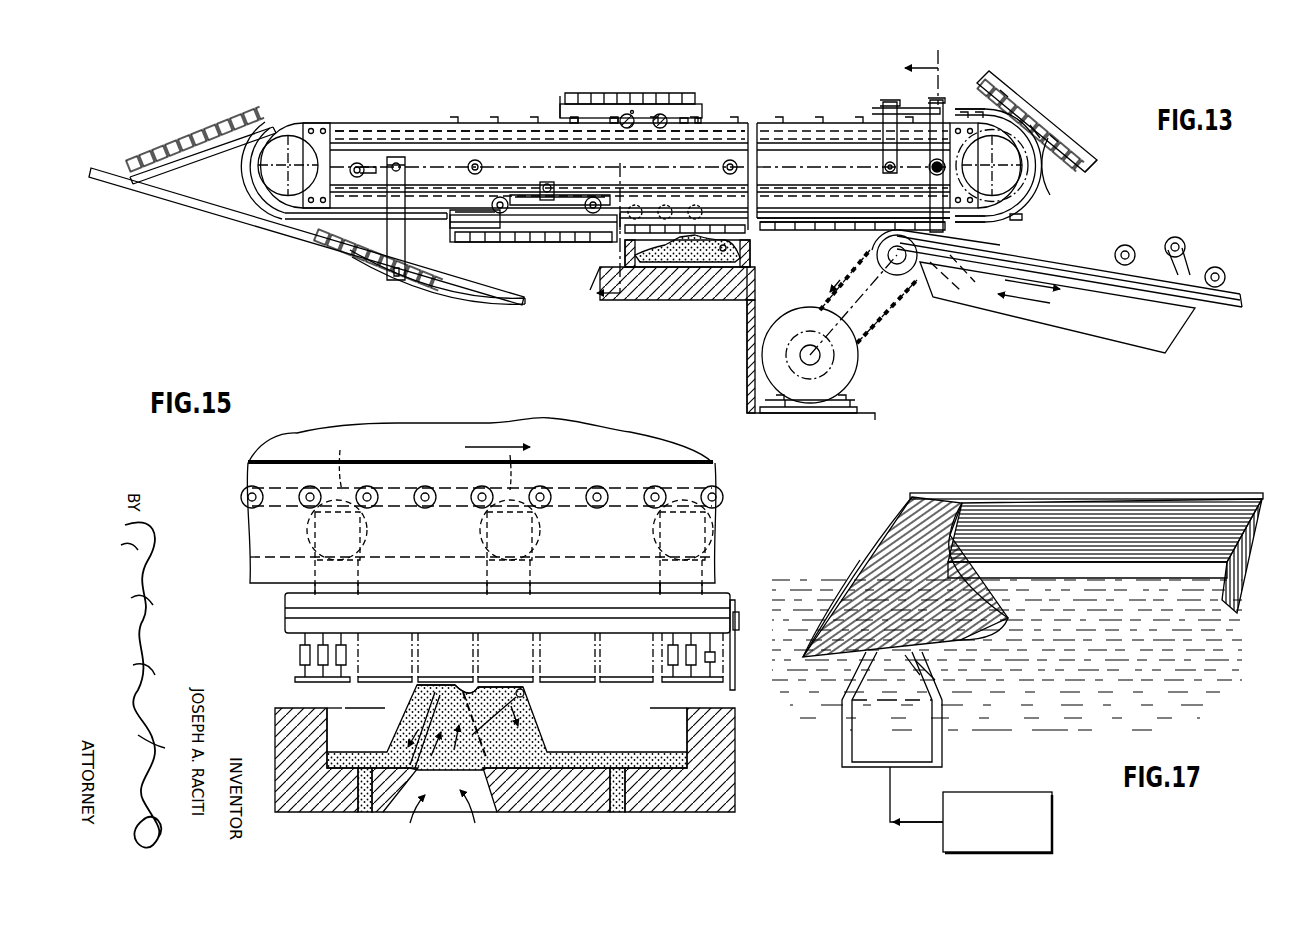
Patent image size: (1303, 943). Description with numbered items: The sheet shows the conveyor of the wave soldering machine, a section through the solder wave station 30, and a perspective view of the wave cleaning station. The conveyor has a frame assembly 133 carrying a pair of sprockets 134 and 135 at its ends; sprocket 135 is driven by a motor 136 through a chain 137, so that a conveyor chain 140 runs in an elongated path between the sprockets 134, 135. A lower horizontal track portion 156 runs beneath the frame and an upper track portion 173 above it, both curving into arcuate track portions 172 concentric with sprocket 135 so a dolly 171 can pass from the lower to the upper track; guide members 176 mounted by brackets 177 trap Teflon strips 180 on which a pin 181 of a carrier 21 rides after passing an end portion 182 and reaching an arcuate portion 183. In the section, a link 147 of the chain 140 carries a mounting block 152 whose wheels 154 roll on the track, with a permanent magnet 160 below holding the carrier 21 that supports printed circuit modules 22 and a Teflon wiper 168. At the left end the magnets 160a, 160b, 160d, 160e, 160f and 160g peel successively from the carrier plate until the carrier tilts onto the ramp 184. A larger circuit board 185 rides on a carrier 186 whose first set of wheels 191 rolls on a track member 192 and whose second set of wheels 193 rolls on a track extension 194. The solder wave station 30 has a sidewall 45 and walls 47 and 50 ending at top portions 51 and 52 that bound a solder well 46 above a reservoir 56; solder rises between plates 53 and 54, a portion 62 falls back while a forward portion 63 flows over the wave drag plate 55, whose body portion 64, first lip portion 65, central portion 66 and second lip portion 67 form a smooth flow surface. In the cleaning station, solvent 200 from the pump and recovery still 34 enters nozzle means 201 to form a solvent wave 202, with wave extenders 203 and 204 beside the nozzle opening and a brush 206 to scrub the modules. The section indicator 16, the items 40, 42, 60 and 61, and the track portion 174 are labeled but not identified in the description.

In FIG. 13, the section line 16- 16 is at (784, 177).
In FIG. 15, the carrier 21 is at (285, 625).
In FIG. 15, the printed circuit modules 22 is at (715, 655).
In FIG. 13, the solder wave station 30 is at (685, 262).
In FIG. 17, the pump and recovery still 34 is at (1052, 806).
In FIG. 13, the discharge conveyor 40 is at (1085, 330).
In FIG. 13, the chain guide unit 42 is at (1065, 128).
In FIG. 15, the sidewall 45 is at (372, 708).
In FIG. 15, the solder well 46 is at (362, 741).
In FIG. 15, the wall 47 is at (340, 708).
In FIG. 15, the wall 50 is at (680, 708).
In FIG. 15, the top portion 51 is at (285, 708).
In FIG. 15, the top portion 52 is at (725, 708).
In FIG. 15, the plate 53 is at (420, 760).
In FIG. 15, the plate 54 is at (475, 765).
In FIG. 15, the wave drag plate 55 is at (510, 720).
In FIG. 15, the reservoir 56 is at (365, 812).
In FIG. 15, the solder inlet slot 60 is at (440, 811).
In FIG. 15, the nozzle lip 61 is at (440, 685).
In FIG. 15, the portion 62 is at (412, 697).
In FIG. 15, the forward portion 63 is at (553, 728).
In FIG. 15, the body portion 64 is at (500, 710).
In FIG. 15, the first lip portion 65 is at (470, 690).
In FIG. 15, the recessed horizontal central portion 66 is at (490, 690).
In FIG. 15, the second lip portion 67 is at (520, 688).
In FIG. 13, the frame assembly 133 is at (705, 150).
In FIG. 13, the sprocket 134 is at (272, 166).
In FIG. 13, the sprocket 135 is at (1030, 180).
In FIG. 13, the motor 136 is at (850, 368).
In FIG. 13, the chain 137 is at (880, 320).
In FIG. 13, the conveyor chain 140 is at (500, 130).
In FIG. 15, the conveyor chain 140 is at (725, 497).
In FIG. 15, the link 147 is at (726, 470).
In FIG. 15, the mounting block 152 is at (366, 555).
In FIG. 15, the wheel 154 is at (368, 522).
In FIG. 13, the horizontal track portion 156 is at (840, 225).
In FIG. 15, the permanent magnet 160 is at (360, 578).
In FIG. 13, the magnet 160a is at (982, 115).
In FIG. 13, the magnet 160b is at (1008, 103).
In FIG. 13, the magnet 160d is at (1085, 172).
In FIG. 13, the magnet 160e is at (1040, 215).
In FIG. 13, the first magnet 160f is at (268, 210).
In FIG. 13, the magnet 160g is at (262, 112).
In FIG. 13, the Teflon wiper 168 is at (562, 100).
In FIG. 15, the Teflon wiper 168 is at (740, 628).
In FIG. 15, the dolly 171 is at (675, 590).
In FIG. 13, the arcuate track portion 172 is at (1020, 218).
In FIG. 13, the upper track portion 173 is at (826, 123).
In FIG. 13, the guide rail 174 is at (1058, 140).
In FIG. 13, the guide member 176 is at (905, 108).
In FIG. 13, the bracket 177 is at (936, 105).
In FIG. 13, the Teflon strip 180 is at (1002, 95).
In FIG. 13, the pin 181 is at (1040, 138).
In FIG. 13, the end portion 182 is at (870, 230).
In FIG. 13, the arcuate portion 183 is at (1035, 197).
In FIG. 13, the ramp 184 is at (192, 208).
In FIG. 13, the circuit board 185 is at (540, 242).
In FIG. 13, the carrier 186 is at (514, 242).
In FIG. 13, the first set of wheels 191 is at (503, 198).
In FIG. 13, the track member 192 is at (470, 228).
In FIG. 13, the second set of wheels 193 is at (550, 182).
In FIG. 13, the track extension 194 is at (580, 197).
In FIG. 17, the solvent 200 is at (1148, 515).
In FIG. 17, the nozzle means 201 is at (845, 700).
In FIG. 17, the solvent wave 202 is at (952, 520).
In FIG. 17, the wave extender 203 is at (832, 620).
In FIG. 17, the wave extender 204 is at (940, 672).
In FIG. 17, the brush 206 is at (1255, 503).